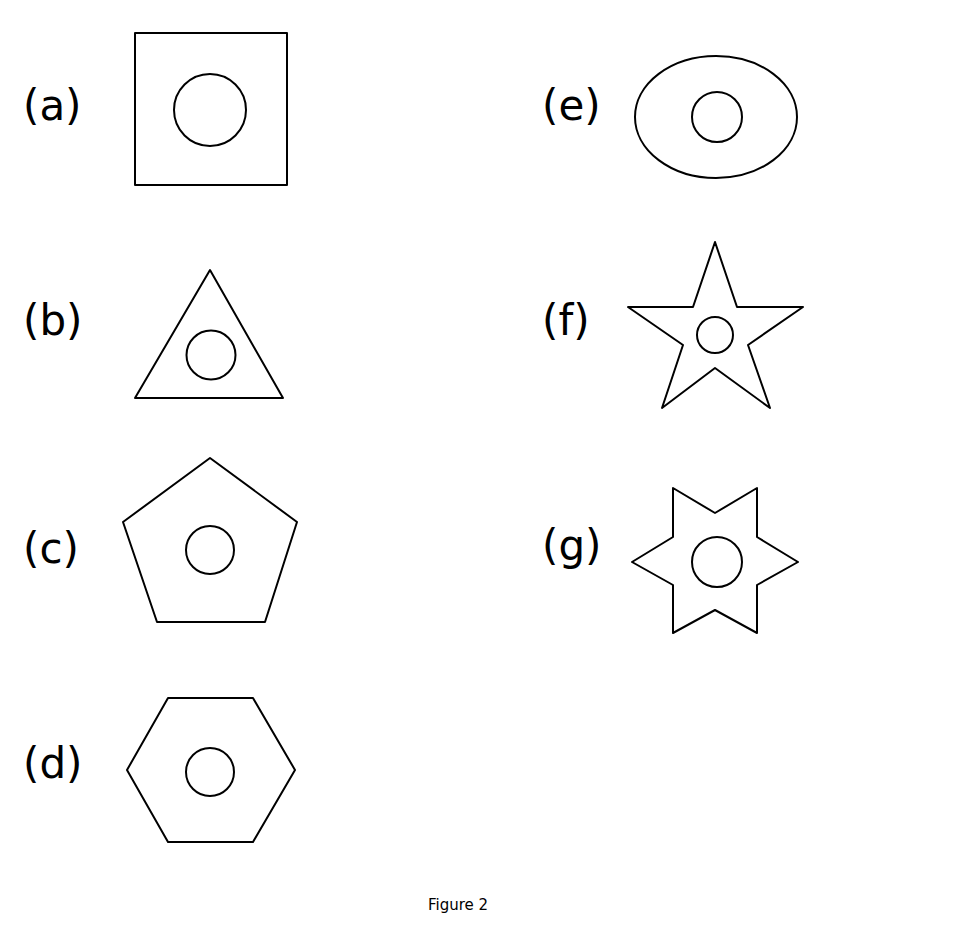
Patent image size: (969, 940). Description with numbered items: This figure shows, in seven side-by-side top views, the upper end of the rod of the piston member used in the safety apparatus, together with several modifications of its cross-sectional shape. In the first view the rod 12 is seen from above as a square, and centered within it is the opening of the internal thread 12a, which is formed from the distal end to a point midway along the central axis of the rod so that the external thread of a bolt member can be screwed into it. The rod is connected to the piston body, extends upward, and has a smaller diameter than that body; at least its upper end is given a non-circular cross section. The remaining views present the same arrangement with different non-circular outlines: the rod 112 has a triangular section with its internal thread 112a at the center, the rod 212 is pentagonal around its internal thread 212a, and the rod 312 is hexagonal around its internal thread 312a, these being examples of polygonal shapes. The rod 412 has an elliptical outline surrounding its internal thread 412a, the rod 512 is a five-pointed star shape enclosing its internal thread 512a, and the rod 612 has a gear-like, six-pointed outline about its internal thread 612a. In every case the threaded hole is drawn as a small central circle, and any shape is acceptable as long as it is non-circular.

The rod 12 is at (310, 73).
The internal thread 12a is at (247, 133).
The rod 112 is at (274, 308).
The internal thread 112a is at (235, 363).
The rod 212 is at (311, 500).
The internal thread 212a is at (235, 562).
The rod 312 is at (306, 726).
The internal thread 312a is at (230, 790).
The rod 412 is at (806, 73).
The internal thread 412a is at (738, 132).
The rod 512 is at (790, 283).
The internal thread 512a is at (727, 348).
The rod 612 is at (790, 521).
The internal thread 612a is at (727, 585).